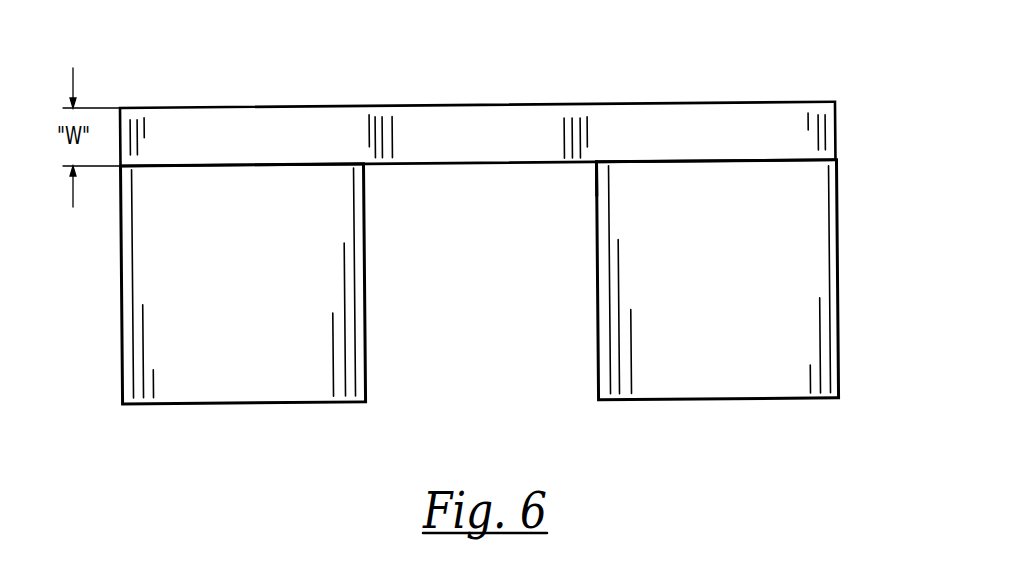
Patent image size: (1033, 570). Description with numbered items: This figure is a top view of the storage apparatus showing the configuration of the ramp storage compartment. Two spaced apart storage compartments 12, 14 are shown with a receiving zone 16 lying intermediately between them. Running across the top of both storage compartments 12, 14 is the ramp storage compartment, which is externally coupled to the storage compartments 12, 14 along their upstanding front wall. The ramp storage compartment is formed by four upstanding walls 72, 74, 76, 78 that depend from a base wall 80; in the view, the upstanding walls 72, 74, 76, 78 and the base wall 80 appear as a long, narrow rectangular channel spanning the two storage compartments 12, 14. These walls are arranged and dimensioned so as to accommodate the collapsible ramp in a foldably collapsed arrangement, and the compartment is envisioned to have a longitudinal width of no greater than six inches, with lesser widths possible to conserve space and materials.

The storage compartment 12 is at (210, 378).
The storage compartment 14 is at (713, 368).
The receiving zone 16 is at (474, 347).
The upstanding wall 72 is at (328, 106).
The upstanding wall 74 is at (596, 163).
The upstanding wall 76 is at (118, 138).
The upstanding wall 78 is at (836, 130).
The base wall 80 is at (472, 145).